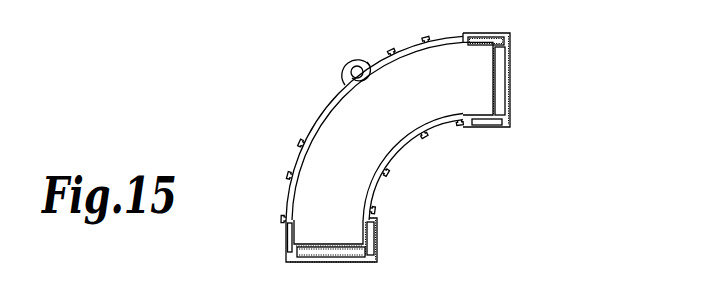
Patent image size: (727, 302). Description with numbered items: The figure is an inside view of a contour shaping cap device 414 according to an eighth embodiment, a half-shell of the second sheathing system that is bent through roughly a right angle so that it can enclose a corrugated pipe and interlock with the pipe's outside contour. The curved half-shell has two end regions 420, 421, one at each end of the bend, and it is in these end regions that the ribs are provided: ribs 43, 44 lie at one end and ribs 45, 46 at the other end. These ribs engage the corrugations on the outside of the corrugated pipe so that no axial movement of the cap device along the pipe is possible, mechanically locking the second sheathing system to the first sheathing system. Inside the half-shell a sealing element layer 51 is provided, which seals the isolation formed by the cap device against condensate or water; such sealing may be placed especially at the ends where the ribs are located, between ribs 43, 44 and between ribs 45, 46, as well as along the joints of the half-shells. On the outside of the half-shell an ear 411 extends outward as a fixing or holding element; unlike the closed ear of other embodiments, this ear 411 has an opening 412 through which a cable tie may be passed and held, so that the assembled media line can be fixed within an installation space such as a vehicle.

The ear 411 is at (347, 63).
The opening 412 is at (352, 74).
The contour shaping cap device 414 is at (322, 157).
The sealing element layer 51 is at (350, 200).
The rib 45 is at (494, 66).
The rib 46 is at (511, 60).
The end region 420 is at (488, 134).
The end region 421 is at (392, 243).
The rib 43 is at (305, 262).
The rib 44 is at (310, 247).